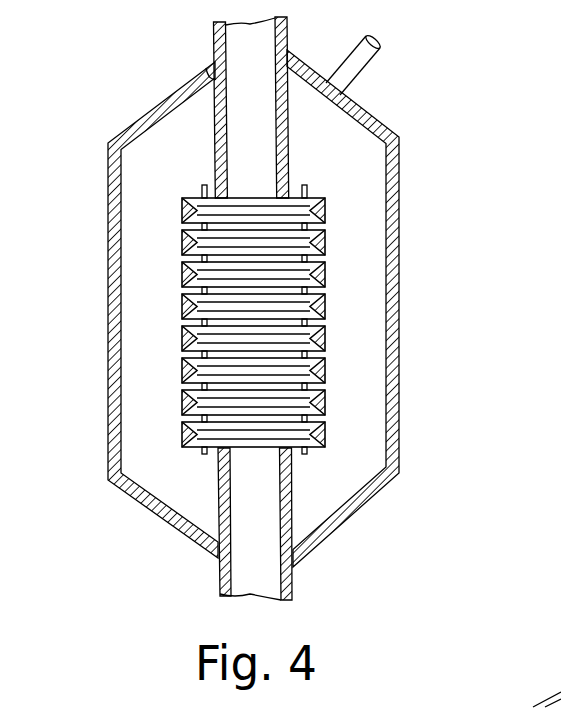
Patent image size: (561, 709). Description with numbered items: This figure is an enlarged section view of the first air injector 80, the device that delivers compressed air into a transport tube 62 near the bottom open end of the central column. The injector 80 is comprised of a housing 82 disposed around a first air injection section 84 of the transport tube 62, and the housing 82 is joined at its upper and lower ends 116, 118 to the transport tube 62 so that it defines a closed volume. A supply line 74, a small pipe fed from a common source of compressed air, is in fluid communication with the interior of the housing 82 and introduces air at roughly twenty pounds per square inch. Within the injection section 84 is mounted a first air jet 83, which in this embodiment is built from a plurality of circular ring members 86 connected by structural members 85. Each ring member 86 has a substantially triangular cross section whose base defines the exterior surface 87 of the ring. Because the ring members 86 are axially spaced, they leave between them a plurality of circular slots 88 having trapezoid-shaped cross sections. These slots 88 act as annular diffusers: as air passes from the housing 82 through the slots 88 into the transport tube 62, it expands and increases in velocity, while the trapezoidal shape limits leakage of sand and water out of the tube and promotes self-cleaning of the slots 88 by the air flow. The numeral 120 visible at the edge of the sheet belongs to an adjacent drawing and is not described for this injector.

The transport tube 62 is at (206, 68).
The supply line 74 is at (368, 70).
The first air injector 80 is at (442, 294).
The housing 82 is at (399, 185).
The first air jet 83 is at (151, 353).
The first air injection section 84 is at (145, 262).
The structural member 85 is at (200, 186).
The circular ring member 86 is at (325, 249).
The exterior surface 87 is at (186, 308).
The circular slot 88 is at (325, 322).
The upper end 116 is at (286, 50).
The lower end 118 is at (293, 566).
The adjacent figure element 120 is at (539, 668).